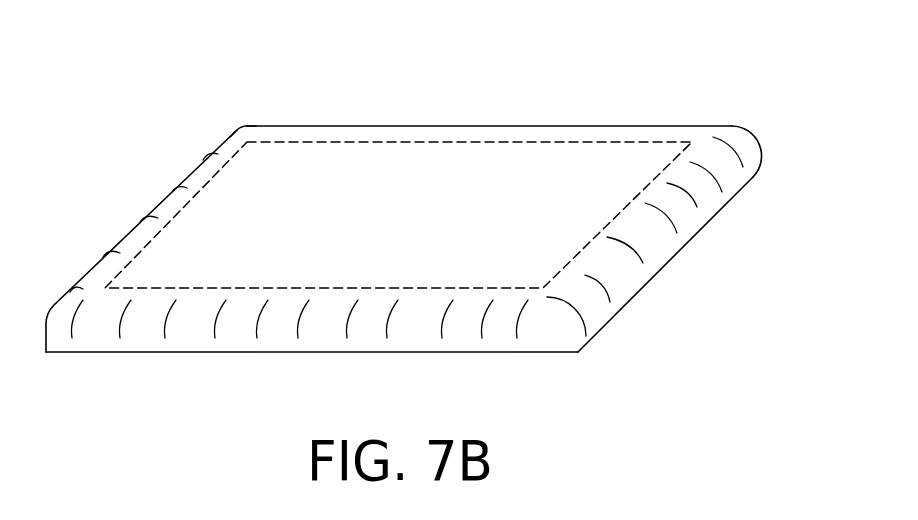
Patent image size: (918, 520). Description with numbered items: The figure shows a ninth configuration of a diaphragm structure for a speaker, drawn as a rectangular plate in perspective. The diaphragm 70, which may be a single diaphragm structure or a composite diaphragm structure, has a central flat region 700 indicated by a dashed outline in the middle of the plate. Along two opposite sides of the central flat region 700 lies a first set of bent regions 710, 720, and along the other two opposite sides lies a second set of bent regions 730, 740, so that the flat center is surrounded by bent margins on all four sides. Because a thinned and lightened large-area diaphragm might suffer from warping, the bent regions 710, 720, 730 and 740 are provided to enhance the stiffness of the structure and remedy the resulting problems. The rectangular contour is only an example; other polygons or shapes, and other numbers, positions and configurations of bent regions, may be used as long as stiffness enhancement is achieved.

The diaphragm 70 is at (725, 393).
The central flat region 700 is at (435, 155).
The bent region 710 is at (737, 137).
The bent region 720 is at (243, 127).
The bent region 730 is at (580, 135).
The bent region 740 is at (242, 327).